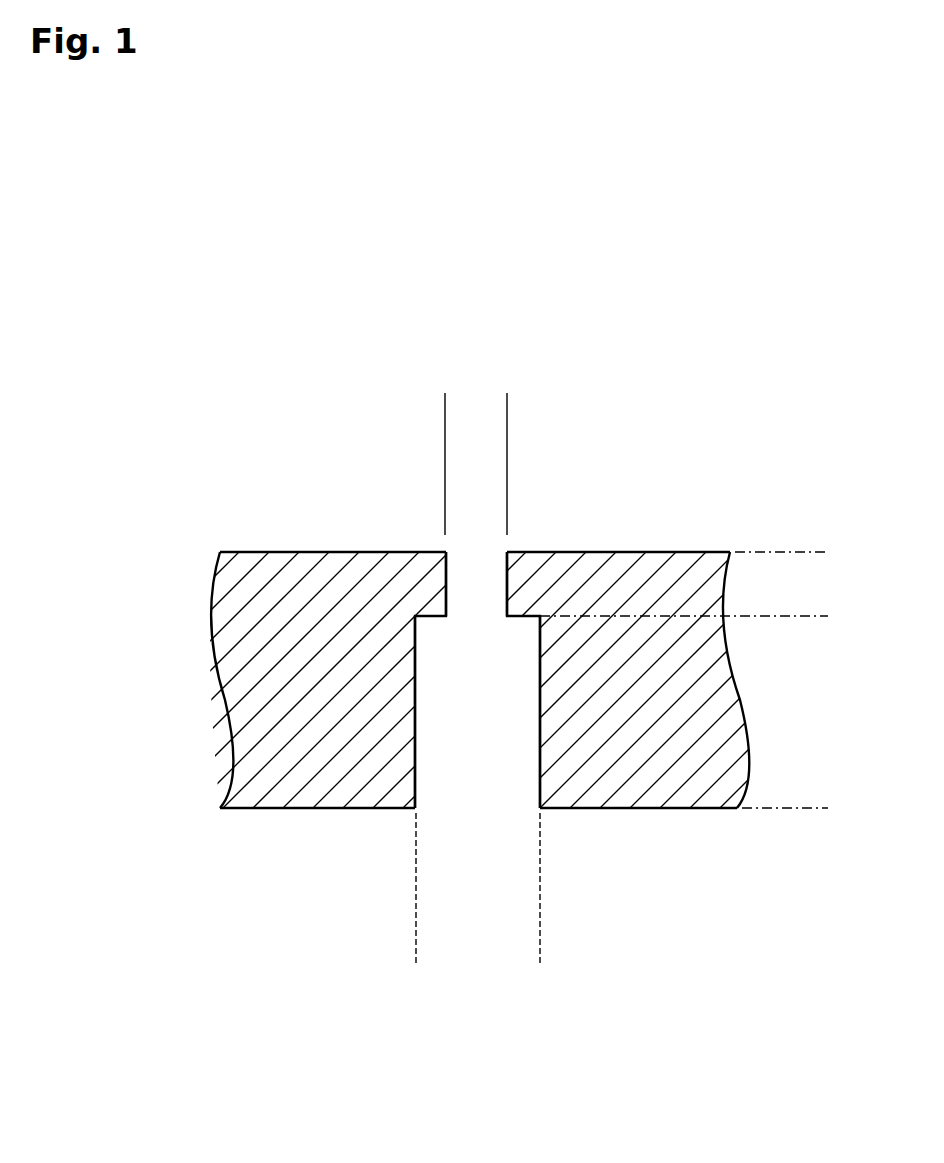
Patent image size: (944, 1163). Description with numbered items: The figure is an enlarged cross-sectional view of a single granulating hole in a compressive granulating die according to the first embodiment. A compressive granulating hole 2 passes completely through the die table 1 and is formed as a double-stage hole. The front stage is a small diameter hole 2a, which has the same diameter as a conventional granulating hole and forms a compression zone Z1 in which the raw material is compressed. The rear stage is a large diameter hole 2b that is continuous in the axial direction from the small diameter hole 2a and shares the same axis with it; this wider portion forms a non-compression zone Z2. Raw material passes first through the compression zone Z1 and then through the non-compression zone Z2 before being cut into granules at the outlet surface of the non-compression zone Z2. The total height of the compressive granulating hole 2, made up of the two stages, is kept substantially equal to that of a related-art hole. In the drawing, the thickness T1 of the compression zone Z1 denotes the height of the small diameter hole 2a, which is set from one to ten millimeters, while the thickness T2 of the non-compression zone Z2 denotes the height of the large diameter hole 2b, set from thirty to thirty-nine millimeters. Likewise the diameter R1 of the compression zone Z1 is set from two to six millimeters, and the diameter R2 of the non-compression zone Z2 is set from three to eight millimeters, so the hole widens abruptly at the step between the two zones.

The die table 1 is at (262, 578).
The compressive granulating hole 2 is at (683, 518).
The small diameter hole 2a is at (500, 593).
The large diameter hole 2b is at (523, 718).
The compression zone Z1 is at (472, 572).
The non-compression zone Z2 is at (478, 700).
The diameter of the compression zone R1 is at (509, 410).
The diameter of the non-compression zone R2 is at (542, 947).
The thickness of the compression zone T1 is at (810, 522).
The thickness of the non-compression zone T2 is at (810, 618).